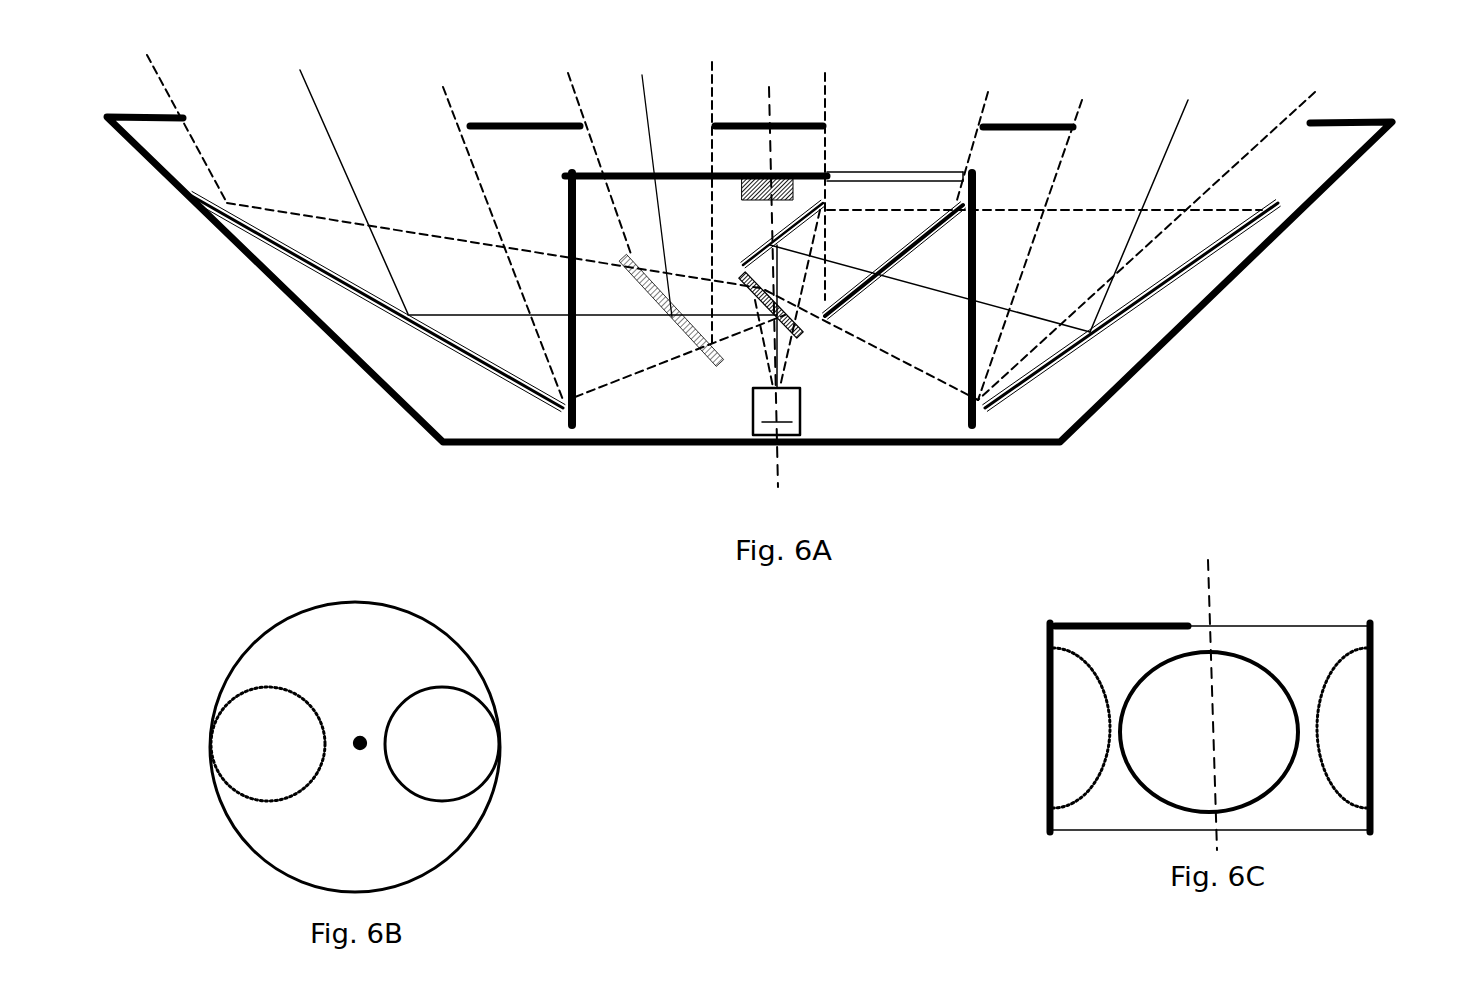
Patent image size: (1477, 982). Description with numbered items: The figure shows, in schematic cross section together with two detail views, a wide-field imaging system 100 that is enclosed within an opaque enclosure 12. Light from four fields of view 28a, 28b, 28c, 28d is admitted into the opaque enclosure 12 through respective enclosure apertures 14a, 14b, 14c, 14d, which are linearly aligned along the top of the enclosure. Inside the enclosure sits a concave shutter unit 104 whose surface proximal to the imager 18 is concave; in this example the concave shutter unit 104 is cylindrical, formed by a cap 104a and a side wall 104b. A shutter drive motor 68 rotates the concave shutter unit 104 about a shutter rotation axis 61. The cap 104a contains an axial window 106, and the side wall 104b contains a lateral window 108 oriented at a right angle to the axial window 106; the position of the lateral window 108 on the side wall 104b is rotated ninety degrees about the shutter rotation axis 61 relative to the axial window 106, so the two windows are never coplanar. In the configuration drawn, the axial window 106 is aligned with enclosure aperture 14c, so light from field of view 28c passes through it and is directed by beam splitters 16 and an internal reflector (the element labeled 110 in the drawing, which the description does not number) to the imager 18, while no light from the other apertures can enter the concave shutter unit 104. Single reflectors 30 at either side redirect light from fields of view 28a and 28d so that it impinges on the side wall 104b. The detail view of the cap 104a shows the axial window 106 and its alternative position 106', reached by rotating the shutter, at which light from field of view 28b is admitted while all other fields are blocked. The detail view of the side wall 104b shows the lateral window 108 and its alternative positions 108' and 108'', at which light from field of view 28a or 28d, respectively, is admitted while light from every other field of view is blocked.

In FIG. 6A, the wide-field imaging system 100 is at (225, 358).
In FIG. 6A, the opaque enclosure 12 is at (255, 263).
In FIG. 6A, the enclosure aperture 14a is at (400, 120).
In FIG. 6A, the enclosure aperture 14b is at (685, 125).
In FIG. 6A, the enclosure aperture 14c is at (923, 122).
In FIG. 6A, the enclosure aperture 14d is at (1170, 128).
In FIG. 6A, the beam splitters 16 is at (695, 340).
In FIG. 6A, the imager 18 is at (800, 412).
In FIG. 6A, the field of view 28a is at (277, 105).
In FIG. 6A, the field of view 28b is at (602, 97).
In FIG. 6A, the field of view 28c is at (963, 92).
In FIG. 6A, the field of view 28d is at (1208, 107).
In FIG. 6A, the single reflectors 30 is at (437, 338).
In FIG. 6A, the shutter rotation axis 61 is at (778, 460).
In FIG. 6B, the shutter rotation axis 61 is at (363, 738).
In FIG. 6C, the shutter rotation axis 61 is at (1212, 598).
In FIG. 6A, the shutter drive motor 68 is at (770, 175).
In FIG. 6A, the concave shutter unit 104 is at (684, 239).
In FIG. 6A, the cap 104a is at (627, 174).
In FIG. 6B, the cap 104a is at (270, 628).
In FIG. 6A, the side wall 104b is at (567, 338).
In FIG. 6C, the side wall 104b is at (1045, 720).
In FIG. 6A, the axial window 106 is at (895, 110).
In FIG. 6B, the axial window 106 is at (482, 744).
In FIG. 6C, the axial window 106 is at (1212, 596).
In FIG. 6B, the position of axial window 106' is at (236, 726).
In FIG. 6C, the lateral window 108 is at (1191, 695).
In FIG. 6C, the position of lateral window 108' is at (1023, 728).
In FIG. 6C, the position of lateral window 108'' is at (1391, 728).
In FIG. 6A, the beam splitter mirror 110 is at (757, 253).